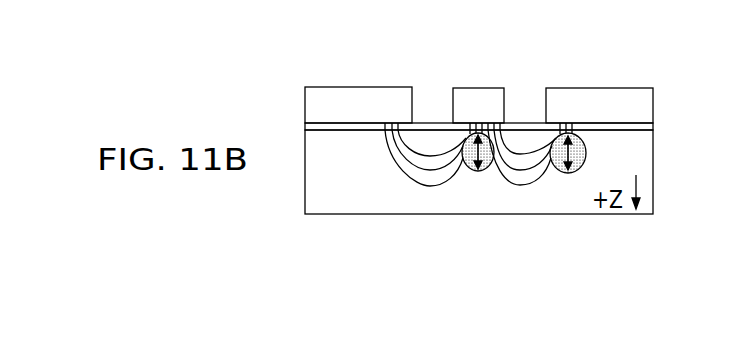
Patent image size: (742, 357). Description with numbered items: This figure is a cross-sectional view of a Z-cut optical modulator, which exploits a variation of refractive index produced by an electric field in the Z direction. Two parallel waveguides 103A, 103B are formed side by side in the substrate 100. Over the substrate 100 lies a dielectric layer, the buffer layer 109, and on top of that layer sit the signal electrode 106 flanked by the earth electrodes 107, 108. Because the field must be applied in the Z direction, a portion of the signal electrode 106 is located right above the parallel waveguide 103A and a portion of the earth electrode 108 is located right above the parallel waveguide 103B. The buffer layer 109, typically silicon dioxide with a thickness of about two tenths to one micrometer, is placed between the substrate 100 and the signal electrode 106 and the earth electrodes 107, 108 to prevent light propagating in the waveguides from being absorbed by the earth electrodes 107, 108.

The substrate 100 is at (342, 197).
The parallel waveguide 103A is at (477, 172).
The parallel waveguide 103B is at (568, 173).
The signal electrode 106 is at (472, 93).
The earth electrode 107 is at (318, 109).
The earth electrode 108 is at (643, 110).
The dielectric layer (buffer layer) 109 is at (650, 130).